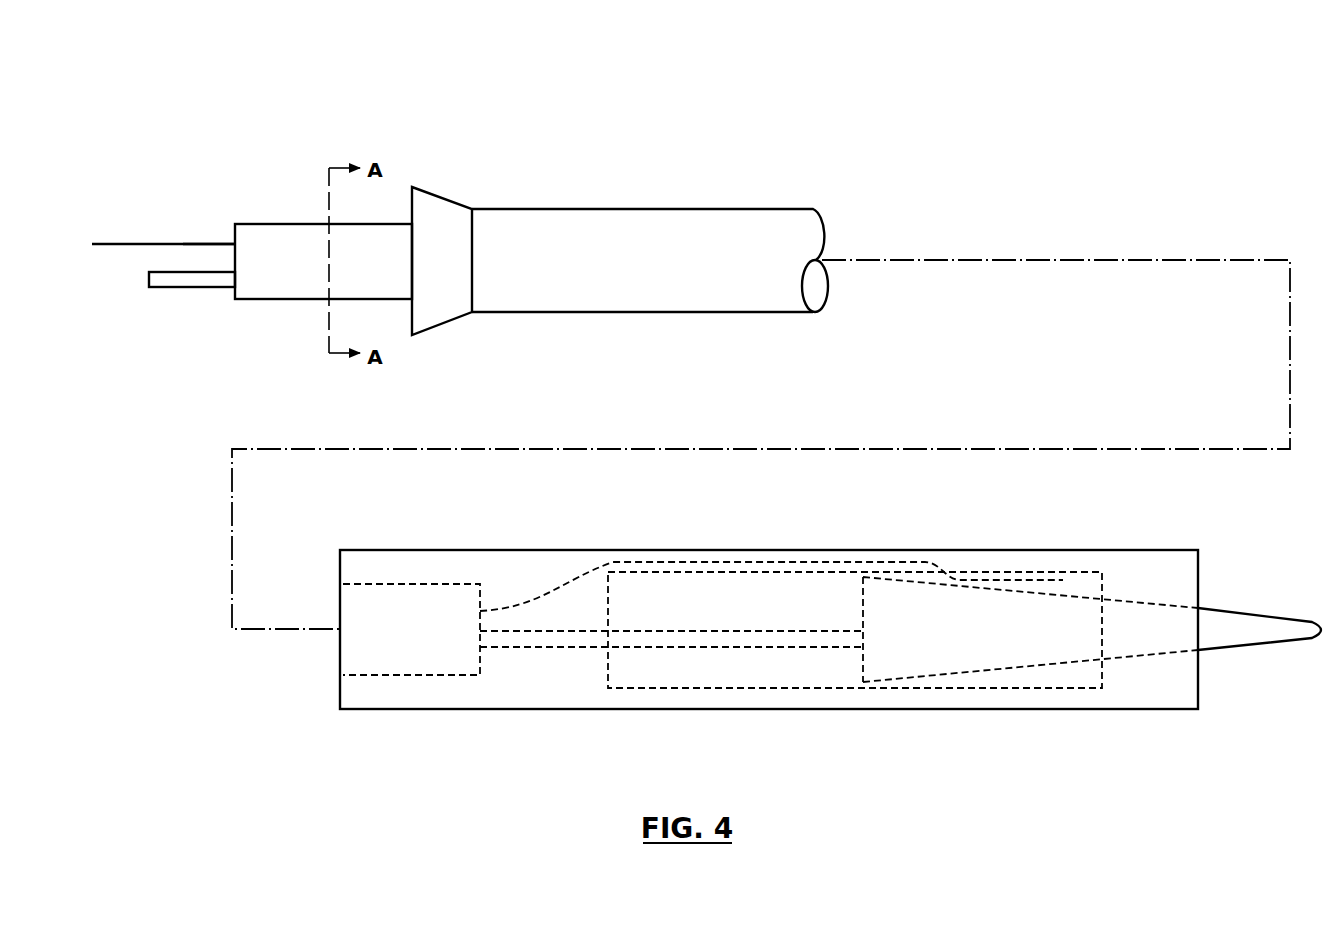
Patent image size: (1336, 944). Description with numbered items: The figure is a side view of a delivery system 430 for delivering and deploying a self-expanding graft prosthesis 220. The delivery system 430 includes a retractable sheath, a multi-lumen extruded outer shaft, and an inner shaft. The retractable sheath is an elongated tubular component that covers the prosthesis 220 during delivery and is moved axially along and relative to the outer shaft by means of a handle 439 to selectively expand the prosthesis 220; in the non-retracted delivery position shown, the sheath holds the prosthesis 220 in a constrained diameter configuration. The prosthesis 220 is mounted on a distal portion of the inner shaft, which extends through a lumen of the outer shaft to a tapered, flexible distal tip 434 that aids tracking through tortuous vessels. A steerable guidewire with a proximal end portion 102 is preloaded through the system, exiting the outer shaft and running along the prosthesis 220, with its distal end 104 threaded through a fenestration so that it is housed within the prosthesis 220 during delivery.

The proximal end portion 102 is at (131, 238).
The distal end portion 104 is at (1008, 577).
The self-expanding prosthesis 220 is at (693, 566).
The delivery system 430 is at (450, 146).
The distal tip 434 is at (1235, 617).
The handle 439 is at (438, 326).